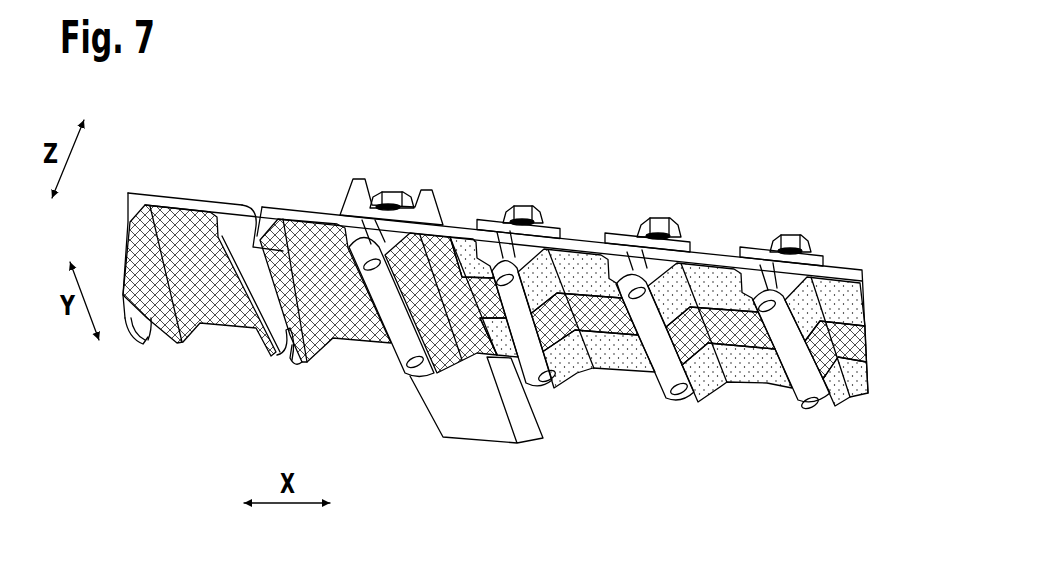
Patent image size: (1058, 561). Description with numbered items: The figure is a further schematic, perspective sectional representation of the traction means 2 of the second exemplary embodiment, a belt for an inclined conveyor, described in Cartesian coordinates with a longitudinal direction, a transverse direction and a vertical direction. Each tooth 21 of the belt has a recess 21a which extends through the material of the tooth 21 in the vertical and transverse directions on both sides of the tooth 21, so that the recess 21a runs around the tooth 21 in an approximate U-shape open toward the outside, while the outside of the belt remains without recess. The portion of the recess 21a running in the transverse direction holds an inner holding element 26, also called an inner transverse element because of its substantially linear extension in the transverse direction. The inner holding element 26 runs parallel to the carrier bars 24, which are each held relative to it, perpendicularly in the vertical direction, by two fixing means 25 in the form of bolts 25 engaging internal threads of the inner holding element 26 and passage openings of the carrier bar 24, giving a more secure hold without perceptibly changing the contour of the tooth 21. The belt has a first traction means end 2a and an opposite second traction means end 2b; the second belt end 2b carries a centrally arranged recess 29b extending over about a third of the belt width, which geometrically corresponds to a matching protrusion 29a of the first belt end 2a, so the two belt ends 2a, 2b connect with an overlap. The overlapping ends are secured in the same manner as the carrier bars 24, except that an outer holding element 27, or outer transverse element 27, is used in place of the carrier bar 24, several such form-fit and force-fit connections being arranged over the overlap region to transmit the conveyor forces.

The traction means 2 is at (294, 142).
The first traction means end 2a is at (148, 184).
The second traction means end 2b is at (875, 290).
The tooth 21 is at (175, 337).
The recess 21a is at (238, 228).
The carrier bar 24 is at (353, 188).
The fixing means 25 is at (395, 196).
The inner holding element 26 is at (393, 325).
The outer holding element 27 is at (483, 218).
The protrusion 29a is at (722, 318).
The recess 29b is at (584, 266).